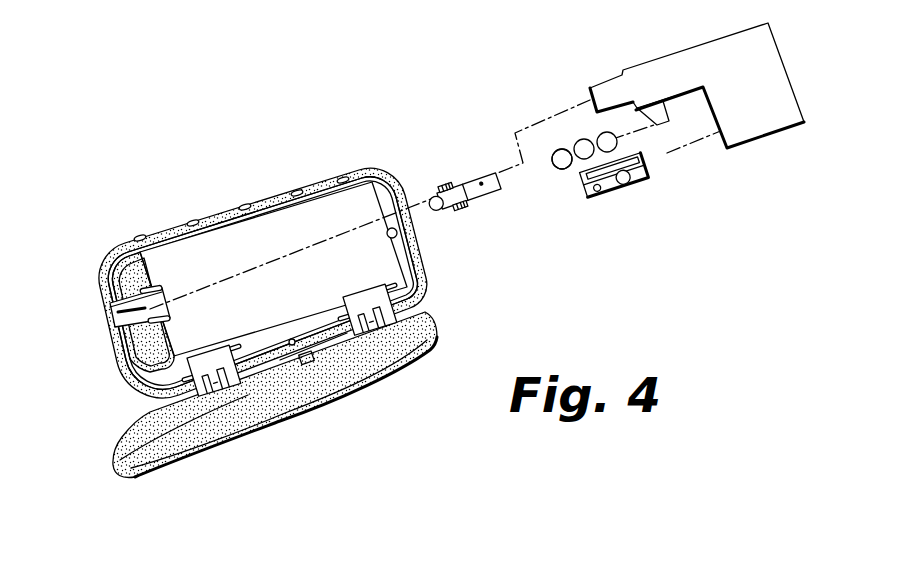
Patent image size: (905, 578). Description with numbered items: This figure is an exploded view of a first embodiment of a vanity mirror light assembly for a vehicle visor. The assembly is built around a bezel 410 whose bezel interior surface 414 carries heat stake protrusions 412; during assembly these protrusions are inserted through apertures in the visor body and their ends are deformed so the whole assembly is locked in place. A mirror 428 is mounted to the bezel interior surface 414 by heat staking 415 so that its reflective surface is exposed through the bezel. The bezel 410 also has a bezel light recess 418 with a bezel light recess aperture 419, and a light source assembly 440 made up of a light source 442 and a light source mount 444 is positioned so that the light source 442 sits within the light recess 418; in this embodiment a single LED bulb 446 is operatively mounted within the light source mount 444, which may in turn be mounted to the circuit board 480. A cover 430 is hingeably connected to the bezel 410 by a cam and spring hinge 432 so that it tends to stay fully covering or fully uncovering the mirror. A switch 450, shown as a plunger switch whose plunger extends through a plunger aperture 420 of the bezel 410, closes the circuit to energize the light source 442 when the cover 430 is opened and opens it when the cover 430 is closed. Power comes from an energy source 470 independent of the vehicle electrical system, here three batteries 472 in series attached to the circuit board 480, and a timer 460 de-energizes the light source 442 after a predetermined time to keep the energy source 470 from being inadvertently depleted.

The bezel 410 is at (118, 238).
The heat stake protrusions 412 is at (192, 222).
The bezel interior surface 414 is at (147, 385).
The heat staking 415 is at (398, 233).
The bezel light recess 418 is at (125, 283).
The bezel light recess aperture 419 is at (120, 322).
The plunger aperture 420 is at (294, 346).
The mirror 428 is at (273, 224).
The cover 430 is at (178, 464).
The cam and spring hinge 432 is at (227, 382).
The light source assembly 440 is at (461, 175).
The light source 442 is at (438, 207).
The light source mount 444 is at (481, 174).
The LED bulb 446 is at (432, 197).
The switch 450 is at (634, 209).
The timer 460 is at (650, 184).
The energy source 470 is at (548, 166).
The batteries 472 is at (566, 170).
The circuit board 480 is at (792, 71).